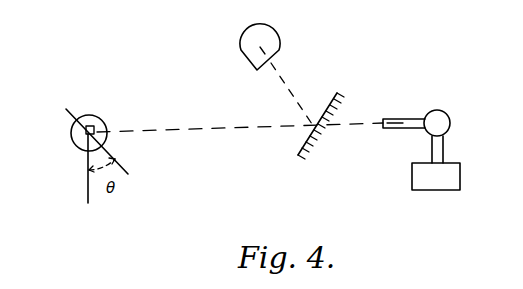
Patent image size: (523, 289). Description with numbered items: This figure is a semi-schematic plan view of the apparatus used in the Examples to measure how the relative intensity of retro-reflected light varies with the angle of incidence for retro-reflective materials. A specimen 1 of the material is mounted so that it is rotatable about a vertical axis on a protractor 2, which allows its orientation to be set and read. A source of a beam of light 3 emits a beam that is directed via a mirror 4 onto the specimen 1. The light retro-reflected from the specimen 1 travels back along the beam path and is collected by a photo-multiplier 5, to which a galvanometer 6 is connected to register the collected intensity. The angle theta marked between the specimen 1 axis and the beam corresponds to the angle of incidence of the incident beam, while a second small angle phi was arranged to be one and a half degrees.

The specimen 1 is at (72, 110).
The protractor 2 is at (74, 147).
The source of a beam of light 3 is at (243, 57).
The mirror 4 is at (300, 148).
The photo-multiplier 5 is at (442, 120).
The galvanometer 6 is at (437, 181).